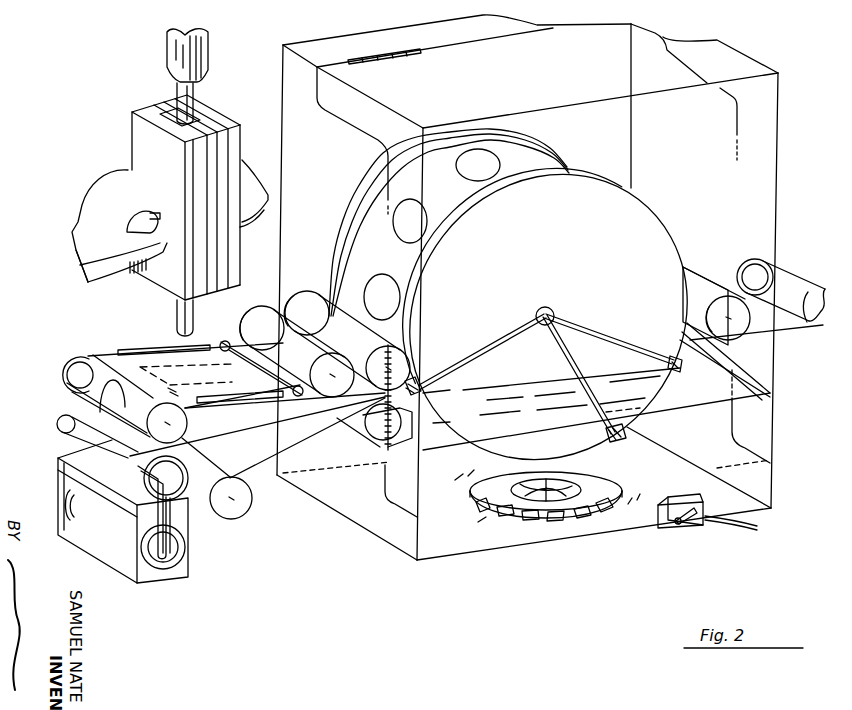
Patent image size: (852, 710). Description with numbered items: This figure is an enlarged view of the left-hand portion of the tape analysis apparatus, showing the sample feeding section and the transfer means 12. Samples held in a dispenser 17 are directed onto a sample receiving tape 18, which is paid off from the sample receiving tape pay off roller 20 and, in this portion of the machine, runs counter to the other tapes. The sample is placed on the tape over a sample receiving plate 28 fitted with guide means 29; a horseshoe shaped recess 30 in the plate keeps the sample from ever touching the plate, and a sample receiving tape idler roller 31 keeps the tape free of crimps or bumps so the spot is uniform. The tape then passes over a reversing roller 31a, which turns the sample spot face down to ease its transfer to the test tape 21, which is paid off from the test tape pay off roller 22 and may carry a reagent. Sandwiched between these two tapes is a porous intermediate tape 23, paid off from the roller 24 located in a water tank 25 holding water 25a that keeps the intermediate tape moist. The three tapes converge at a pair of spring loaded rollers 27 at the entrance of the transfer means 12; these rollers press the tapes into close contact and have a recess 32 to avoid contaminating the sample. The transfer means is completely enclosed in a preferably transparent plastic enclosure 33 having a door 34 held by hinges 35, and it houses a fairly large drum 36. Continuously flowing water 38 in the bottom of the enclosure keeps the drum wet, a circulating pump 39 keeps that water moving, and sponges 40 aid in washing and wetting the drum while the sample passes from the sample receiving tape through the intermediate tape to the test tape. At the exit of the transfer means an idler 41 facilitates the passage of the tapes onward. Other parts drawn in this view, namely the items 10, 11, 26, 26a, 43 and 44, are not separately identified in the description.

The cabinet housing 10 is at (745, 64).
The plunger rod 11 is at (163, 347).
The transfer means 12 is at (342, 493).
The dispenser 17 is at (83, 230).
The sample receiving tape 18 is at (112, 357).
The sample receiving tape pay off roller 20 is at (252, 318).
The test tape 21 is at (255, 465).
The test tape pay off roller 22 is at (240, 512).
The intermediate tape 23 is at (225, 440).
The intermediate tape pay off roller 24 is at (165, 567).
The water tank 25 is at (133, 573).
The water 25a is at (182, 522).
The roller 26 is at (177, 473).
The shaft 26a is at (60, 423).
The spring loaded rollers 27 is at (303, 317).
The sample receiving plate 28 is at (197, 350).
The guide means 29 is at (130, 350).
The horseshoe shaped recess 30 is at (222, 380).
The sample receiving tape idler roller 31 is at (223, 345).
The reversing roller 31a is at (67, 360).
The recess 32 is at (350, 340).
The enclosure 33 is at (385, 543).
The door 34 is at (402, 117).
The hinges 35 is at (372, 53).
The drum 36 is at (578, 182).
The continuously flowing water 38 is at (750, 385).
The circulating pump 39 is at (613, 490).
The sponge 40 is at (625, 423).
The idler 41 is at (697, 290).
The output roller 43 is at (797, 273).
The switch 44 is at (677, 530).